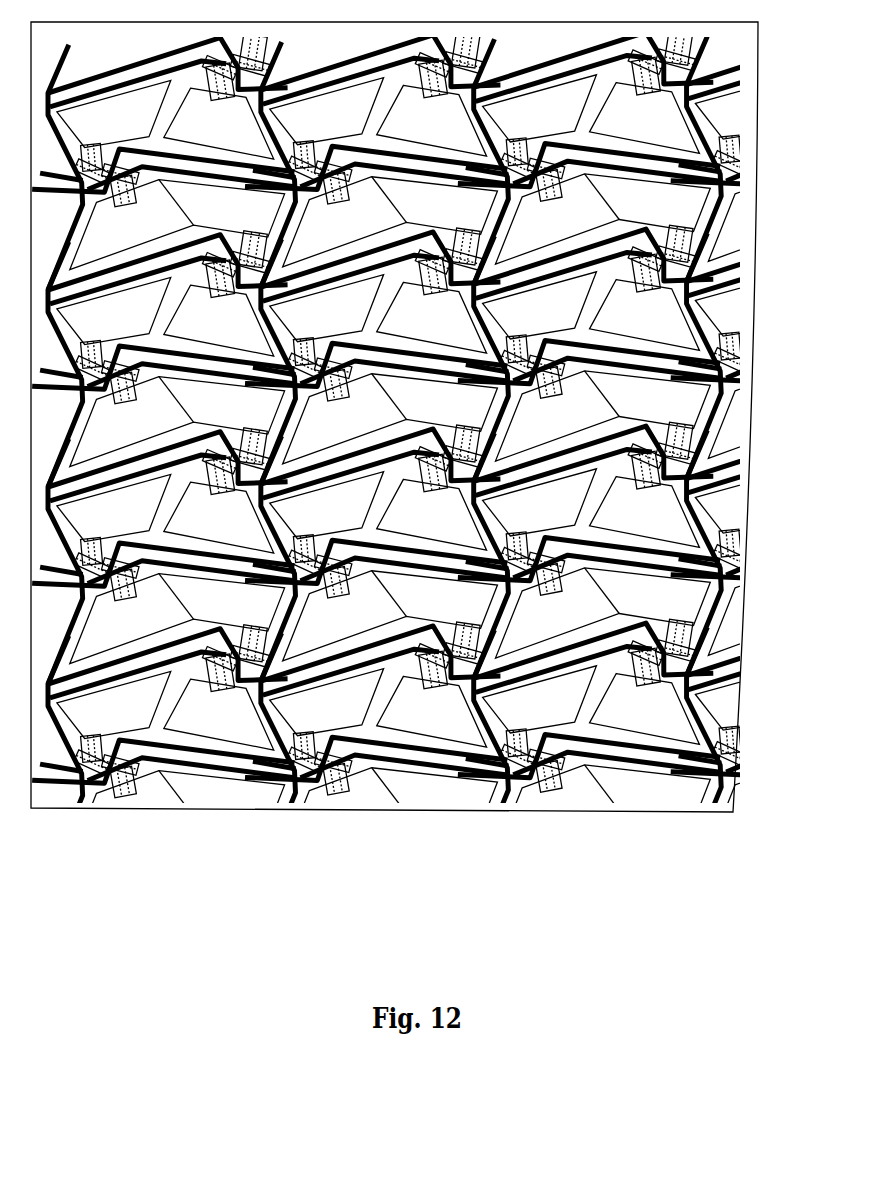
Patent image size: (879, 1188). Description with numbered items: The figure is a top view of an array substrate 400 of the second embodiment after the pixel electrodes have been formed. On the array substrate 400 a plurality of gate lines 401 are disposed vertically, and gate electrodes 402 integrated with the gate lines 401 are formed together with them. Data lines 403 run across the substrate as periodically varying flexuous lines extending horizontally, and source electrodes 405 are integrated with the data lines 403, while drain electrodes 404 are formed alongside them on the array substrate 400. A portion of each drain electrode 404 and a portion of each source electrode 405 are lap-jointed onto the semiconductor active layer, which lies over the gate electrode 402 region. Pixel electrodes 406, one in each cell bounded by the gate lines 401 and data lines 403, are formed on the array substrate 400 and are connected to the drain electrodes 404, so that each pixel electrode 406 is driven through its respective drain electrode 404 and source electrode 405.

The array substrate 400 is at (747, 40).
The gate line 401 is at (703, 140).
The gate electrode 402 is at (697, 283).
The data line 403 is at (730, 477).
The drain electrode 404 is at (687, 673).
The source electrode 405 is at (703, 640).
The pixel electrode 406 is at (672, 533).